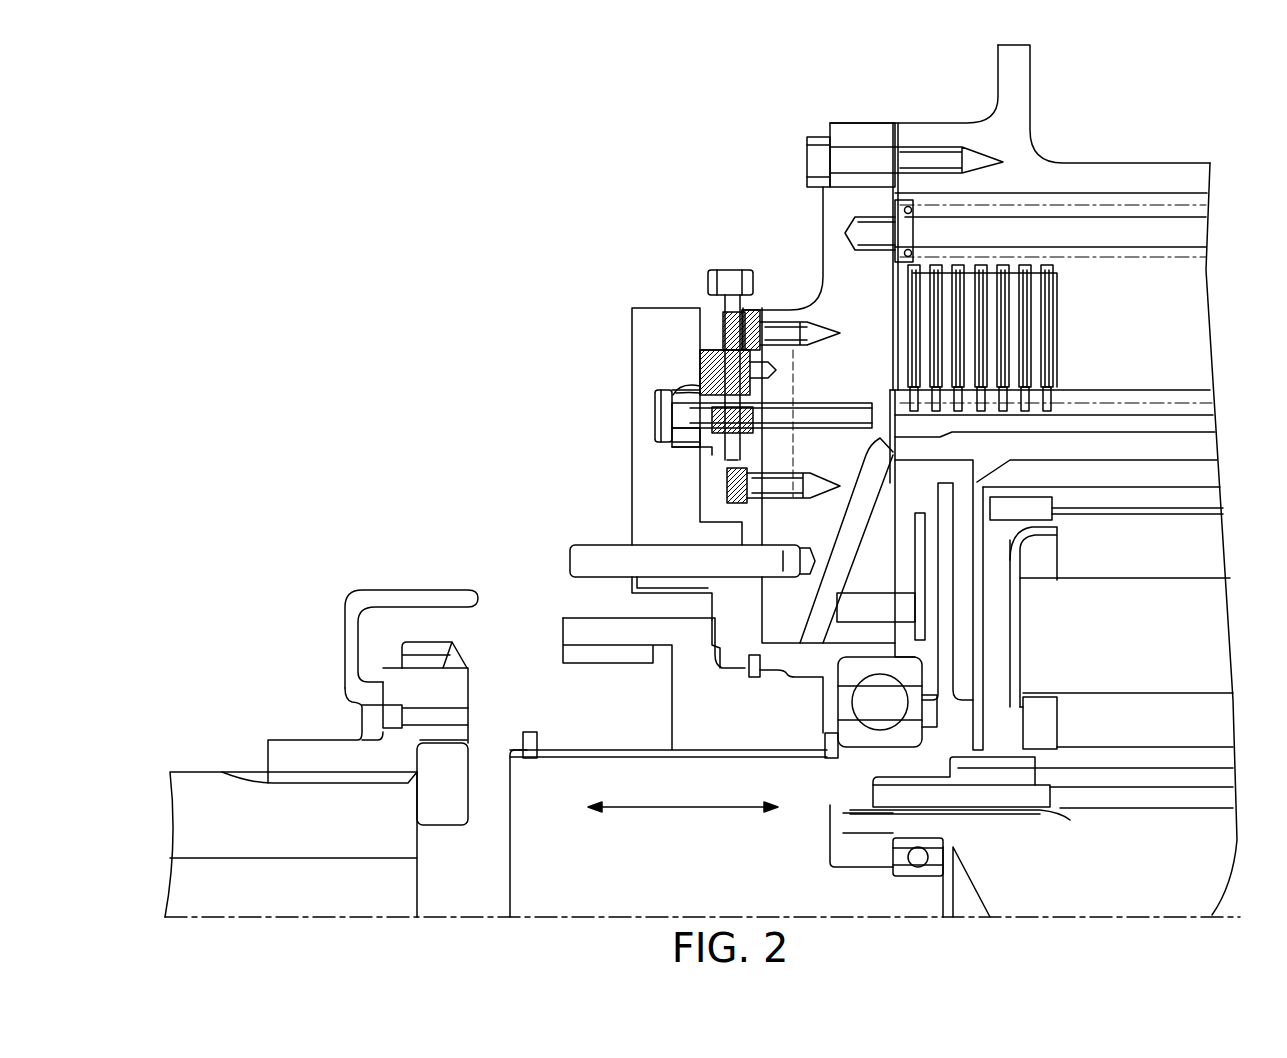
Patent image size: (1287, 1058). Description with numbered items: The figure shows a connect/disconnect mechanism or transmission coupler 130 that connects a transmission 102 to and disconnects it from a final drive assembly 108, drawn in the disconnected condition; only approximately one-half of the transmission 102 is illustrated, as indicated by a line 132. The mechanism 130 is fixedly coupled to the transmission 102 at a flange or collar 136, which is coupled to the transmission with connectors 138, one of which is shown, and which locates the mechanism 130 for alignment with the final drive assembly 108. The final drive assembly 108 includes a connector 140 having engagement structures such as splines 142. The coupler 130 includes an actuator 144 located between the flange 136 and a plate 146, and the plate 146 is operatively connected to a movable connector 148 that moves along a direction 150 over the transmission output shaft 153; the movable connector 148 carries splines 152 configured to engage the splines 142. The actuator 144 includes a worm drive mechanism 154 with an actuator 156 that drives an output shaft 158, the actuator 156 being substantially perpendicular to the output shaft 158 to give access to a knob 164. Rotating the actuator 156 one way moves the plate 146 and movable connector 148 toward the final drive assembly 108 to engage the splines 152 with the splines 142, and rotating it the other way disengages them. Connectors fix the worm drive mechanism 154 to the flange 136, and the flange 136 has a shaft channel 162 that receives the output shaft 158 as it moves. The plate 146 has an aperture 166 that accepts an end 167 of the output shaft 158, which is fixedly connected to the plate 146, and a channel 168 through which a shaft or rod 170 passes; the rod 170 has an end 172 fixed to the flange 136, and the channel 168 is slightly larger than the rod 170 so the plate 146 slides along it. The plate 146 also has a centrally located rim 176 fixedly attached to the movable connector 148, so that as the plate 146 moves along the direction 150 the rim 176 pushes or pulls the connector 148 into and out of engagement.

The transmission 102 is at (1100, 110).
The final drive assembly 108 is at (294, 715).
The transmission coupler 130 is at (648, 292).
The line 132 is at (1100, 900).
The flange 136 is at (832, 212).
The connector 138 is at (815, 138).
The connector 140 is at (398, 568).
The splines 142 is at (425, 648).
The actuator 144 is at (683, 233).
The plate 146 is at (643, 332).
The movable connector 148 is at (700, 745).
The direction 150 is at (708, 812).
The splines 152 is at (603, 680).
The transmission output shaft 153 is at (524, 856).
The worm drive mechanism 154 is at (646, 422).
The actuator 156 is at (714, 252).
The output shaft 158 is at (683, 392).
The shaft channel 162 is at (815, 410).
The knob 164 is at (728, 272).
The aperture 166 is at (682, 443).
The end 167 is at (657, 413).
The channel 168 is at (607, 588).
The shaft 170 is at (589, 548).
The end 172 is at (770, 555).
The rim 176 is at (727, 660).